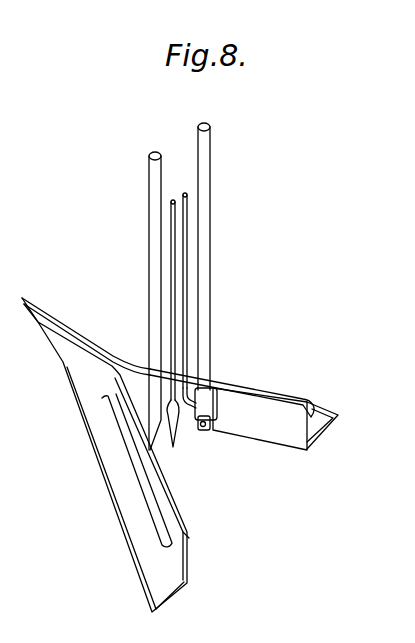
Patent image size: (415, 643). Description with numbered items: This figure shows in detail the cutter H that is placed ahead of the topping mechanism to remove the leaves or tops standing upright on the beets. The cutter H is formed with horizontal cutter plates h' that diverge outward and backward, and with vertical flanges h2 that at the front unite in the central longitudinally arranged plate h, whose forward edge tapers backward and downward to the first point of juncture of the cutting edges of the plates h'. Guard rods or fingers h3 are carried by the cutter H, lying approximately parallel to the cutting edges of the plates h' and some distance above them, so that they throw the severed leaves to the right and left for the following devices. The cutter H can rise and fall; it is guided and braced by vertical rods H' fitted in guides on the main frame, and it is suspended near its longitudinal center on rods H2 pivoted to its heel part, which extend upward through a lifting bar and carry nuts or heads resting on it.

The central longitudinally arranged plate h is at (29, 296).
The horizontal cutter plates h' is at (182, 458).
The vertical flanges h2 is at (85, 340).
The guard rods or fingers h3 is at (137, 492).
The cutter H is at (201, 397).
The vertical rods H' is at (180, 286).
The suspension rods H2 is at (173, 262).